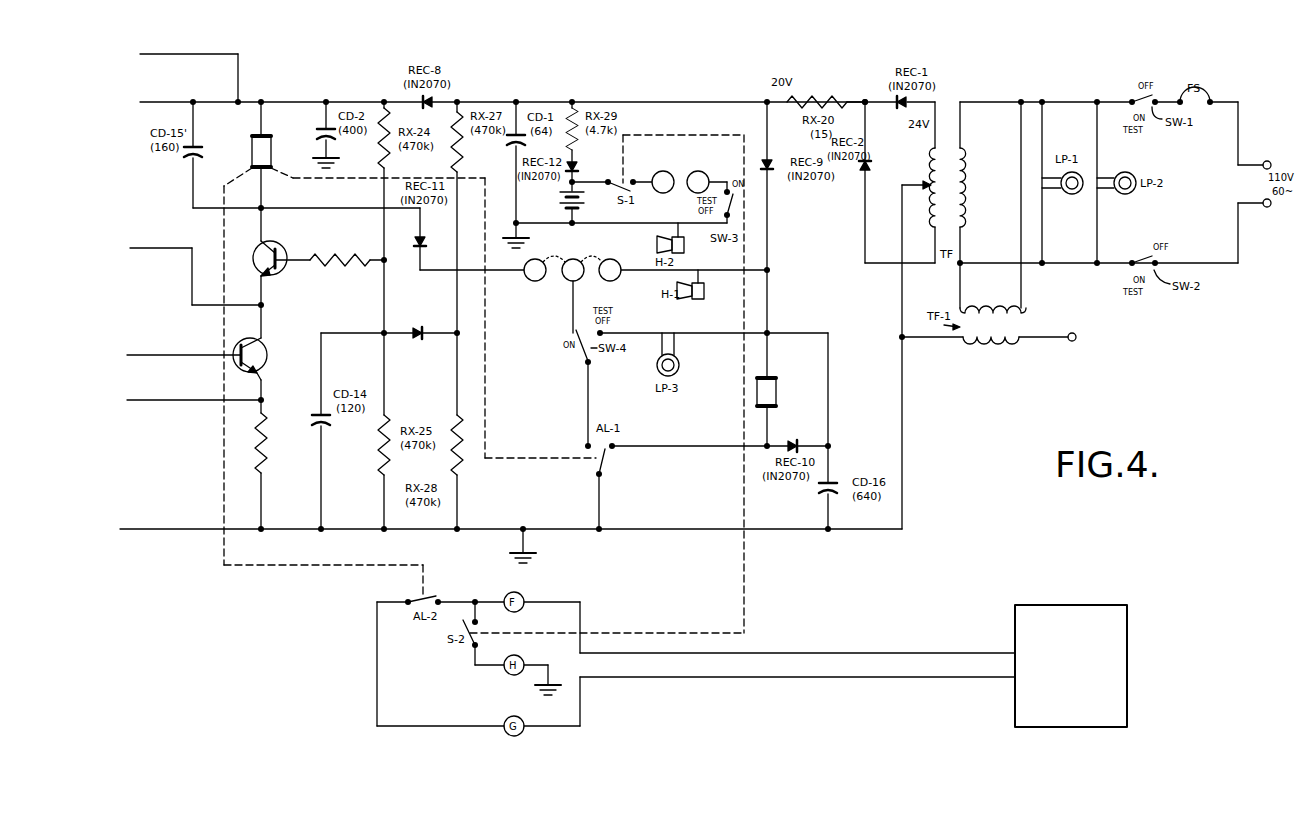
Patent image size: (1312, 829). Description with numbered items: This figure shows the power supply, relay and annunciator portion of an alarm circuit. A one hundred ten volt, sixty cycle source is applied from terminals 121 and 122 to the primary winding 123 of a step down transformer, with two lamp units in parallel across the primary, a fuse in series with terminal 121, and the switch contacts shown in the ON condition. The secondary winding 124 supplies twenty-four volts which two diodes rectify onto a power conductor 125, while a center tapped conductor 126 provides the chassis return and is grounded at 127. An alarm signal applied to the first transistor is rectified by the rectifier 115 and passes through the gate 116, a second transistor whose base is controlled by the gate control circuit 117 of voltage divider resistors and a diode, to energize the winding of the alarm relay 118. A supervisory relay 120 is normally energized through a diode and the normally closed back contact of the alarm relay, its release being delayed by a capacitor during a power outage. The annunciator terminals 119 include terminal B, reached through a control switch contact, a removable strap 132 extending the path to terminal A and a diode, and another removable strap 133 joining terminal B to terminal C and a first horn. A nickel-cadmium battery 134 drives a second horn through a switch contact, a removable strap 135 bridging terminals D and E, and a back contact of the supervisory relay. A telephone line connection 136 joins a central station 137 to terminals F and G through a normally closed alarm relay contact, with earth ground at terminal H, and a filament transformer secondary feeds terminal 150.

The rectifier 115 is at (200, 338).
The gate 116 is at (238, 277).
The gate control circuit 117 is at (418, 318).
The alarm relay 118 is at (235, 131).
The terminal connections A, B, C 119 is at (582, 258).
The supervisory relay 120 is at (747, 397).
The terminal 121 is at (1267, 161).
The terminal 122 is at (1267, 207).
The primary winding 123 is at (966, 176).
The secondary winding 124 is at (926, 173).
The conductor 125 is at (862, 99).
The conductor 126 is at (905, 408).
The chassis ground 127 is at (531, 556).
The removable strap 132 is at (553, 256).
The removable strap 133 is at (591, 256).
The nickel-cadmium battery 134 is at (560, 203).
The removable strap 135 is at (688, 173).
The telephone line connection 136 is at (846, 645).
The central station 137 is at (1070, 612).
The terminal 150 is at (1074, 333).